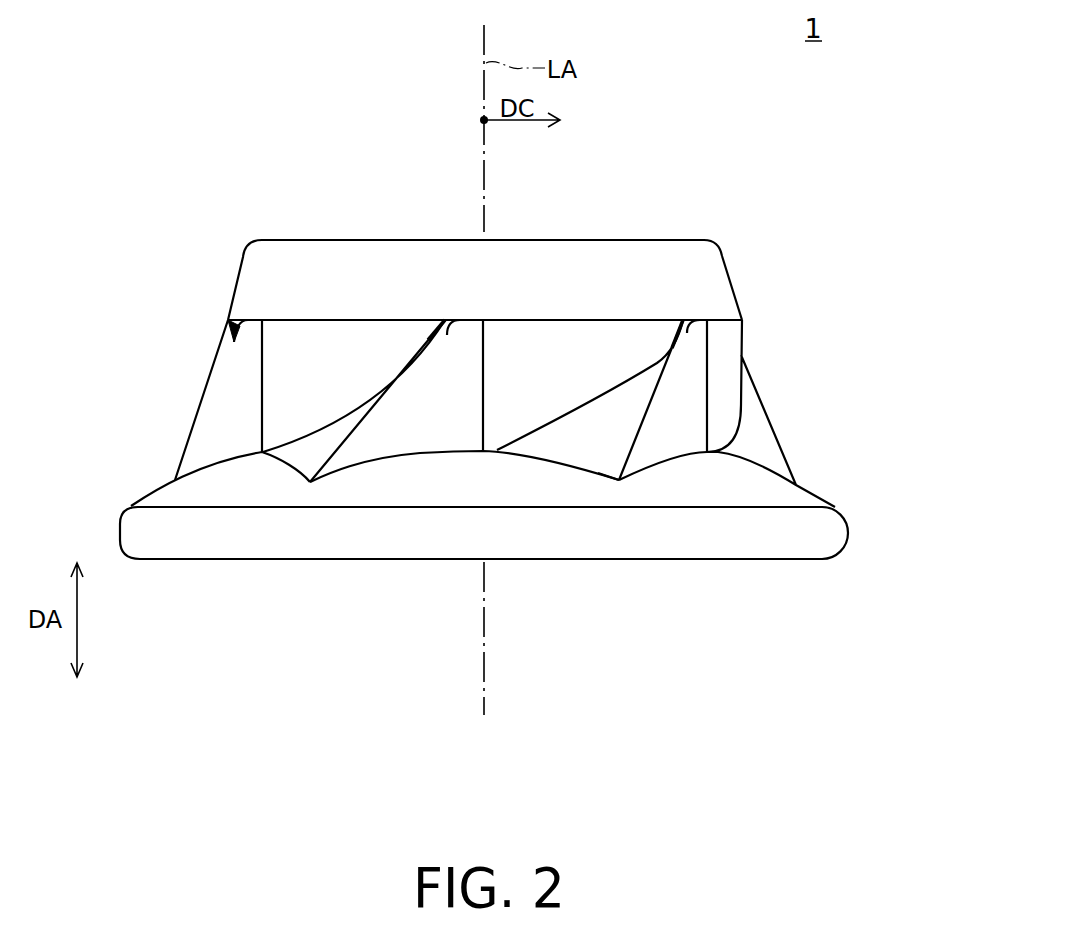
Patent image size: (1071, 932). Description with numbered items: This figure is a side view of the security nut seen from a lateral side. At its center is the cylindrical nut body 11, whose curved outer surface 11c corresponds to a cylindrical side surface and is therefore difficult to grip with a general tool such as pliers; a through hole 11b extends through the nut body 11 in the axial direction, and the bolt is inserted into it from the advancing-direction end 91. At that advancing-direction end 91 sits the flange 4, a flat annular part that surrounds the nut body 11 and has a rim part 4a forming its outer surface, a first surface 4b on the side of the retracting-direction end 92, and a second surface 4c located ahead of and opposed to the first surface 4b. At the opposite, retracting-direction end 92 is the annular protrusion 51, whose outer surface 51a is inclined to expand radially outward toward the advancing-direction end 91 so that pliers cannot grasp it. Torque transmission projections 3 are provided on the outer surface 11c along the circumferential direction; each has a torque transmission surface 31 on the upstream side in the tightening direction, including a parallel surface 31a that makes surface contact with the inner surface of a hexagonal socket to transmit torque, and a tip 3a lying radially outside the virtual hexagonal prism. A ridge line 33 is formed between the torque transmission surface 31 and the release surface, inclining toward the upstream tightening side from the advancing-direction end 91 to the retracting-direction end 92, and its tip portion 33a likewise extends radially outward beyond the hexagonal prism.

The annular protrusion 51 is at (677, 258).
The outer surface of the annular protrusion 51a is at (727, 258).
The nut body 11 is at (622, 335).
The through hole 11b is at (445, 567).
The outer surface of the nut body 11c is at (622, 363).
The retracting-direction end 92 is at (585, 318).
The torque transmission projection 3 is at (622, 418).
The tip of the torque transmission projection 3a is at (620, 483).
The ridge line 33 is at (360, 400).
The tip portion of the ridge line 33a is at (613, 480).
The torque transmission surface 31 is at (461, 536).
The parallel surface 31a is at (390, 433).
The advancing-direction end 91 is at (267, 453).
The flange 4 is at (519, 516).
The rim part 4a is at (849, 533).
The first surface 4b is at (790, 510).
The second surface 4c is at (797, 560).